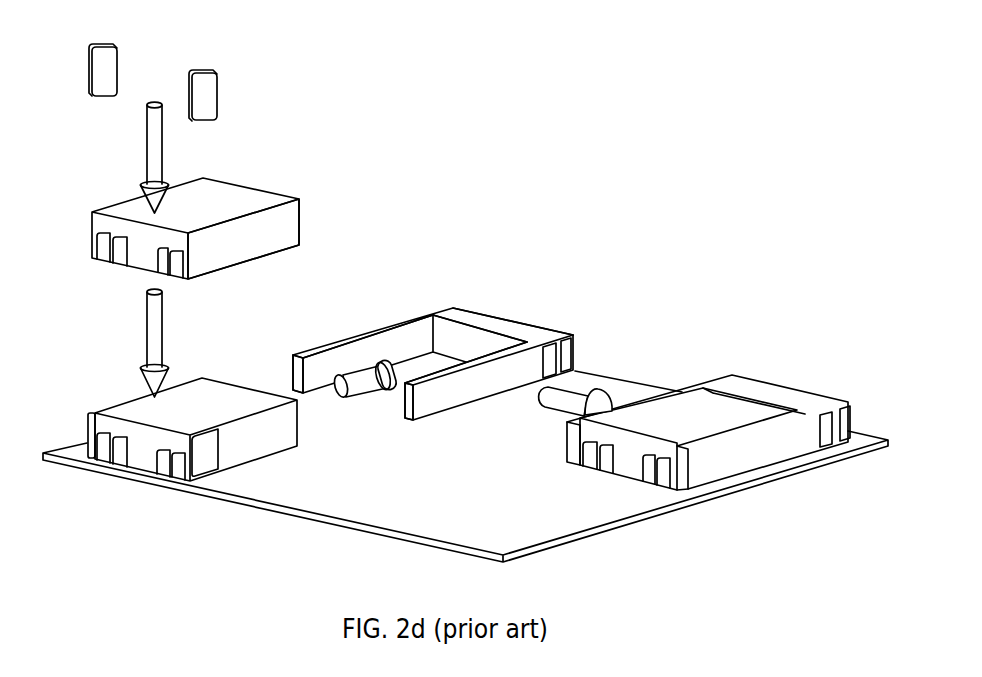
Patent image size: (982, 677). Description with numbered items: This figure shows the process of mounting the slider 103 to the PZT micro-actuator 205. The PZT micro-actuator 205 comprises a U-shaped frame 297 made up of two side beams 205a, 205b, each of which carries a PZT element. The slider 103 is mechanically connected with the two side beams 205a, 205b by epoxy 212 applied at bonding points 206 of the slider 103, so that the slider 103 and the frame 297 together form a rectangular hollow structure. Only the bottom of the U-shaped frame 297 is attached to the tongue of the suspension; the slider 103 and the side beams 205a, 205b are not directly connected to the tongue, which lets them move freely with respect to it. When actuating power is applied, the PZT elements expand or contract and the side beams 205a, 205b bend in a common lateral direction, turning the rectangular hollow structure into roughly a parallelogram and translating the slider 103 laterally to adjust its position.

The epoxy 212 is at (198, 77).
The slider 103 is at (248, 198).
The bonding points 206 is at (203, 253).
The PZT micro-actuator 205 is at (513, 295).
The side beam 205a is at (373, 348).
The side beam 205b is at (443, 382).
The U-shaped frame 297 is at (470, 323).